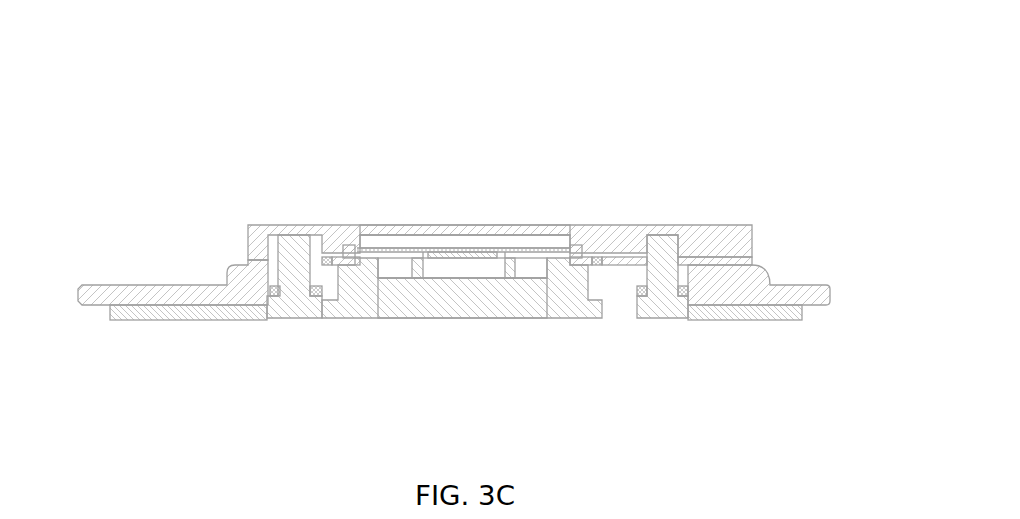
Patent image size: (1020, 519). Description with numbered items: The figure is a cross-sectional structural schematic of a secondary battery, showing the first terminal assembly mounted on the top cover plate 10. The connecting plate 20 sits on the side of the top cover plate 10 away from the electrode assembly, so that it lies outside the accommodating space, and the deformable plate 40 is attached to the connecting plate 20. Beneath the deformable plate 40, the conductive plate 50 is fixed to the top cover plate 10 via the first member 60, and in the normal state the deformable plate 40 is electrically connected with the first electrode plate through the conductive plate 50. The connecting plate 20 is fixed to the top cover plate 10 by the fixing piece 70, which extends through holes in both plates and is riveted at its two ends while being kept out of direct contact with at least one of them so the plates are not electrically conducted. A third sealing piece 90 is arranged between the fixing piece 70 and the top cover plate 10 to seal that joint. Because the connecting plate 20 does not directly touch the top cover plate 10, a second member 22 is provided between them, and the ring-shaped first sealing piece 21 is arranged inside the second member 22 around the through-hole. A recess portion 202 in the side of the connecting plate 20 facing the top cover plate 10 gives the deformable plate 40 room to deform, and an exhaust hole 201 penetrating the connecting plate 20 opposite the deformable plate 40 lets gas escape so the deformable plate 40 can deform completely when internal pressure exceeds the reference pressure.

The top cover plate 10 is at (148, 285).
The connecting plate 20 is at (720, 250).
The exhaust hole 201 is at (467, 230).
The recess portion 202 is at (527, 243).
The first sealing piece 21 is at (600, 262).
The second member 22 is at (753, 263).
The deformable plate 40 is at (403, 250).
The conductive plate 50 is at (558, 298).
The first member 60 is at (247, 312).
The fixing piece 70 is at (290, 240).
The third sealing piece 90 is at (690, 296).